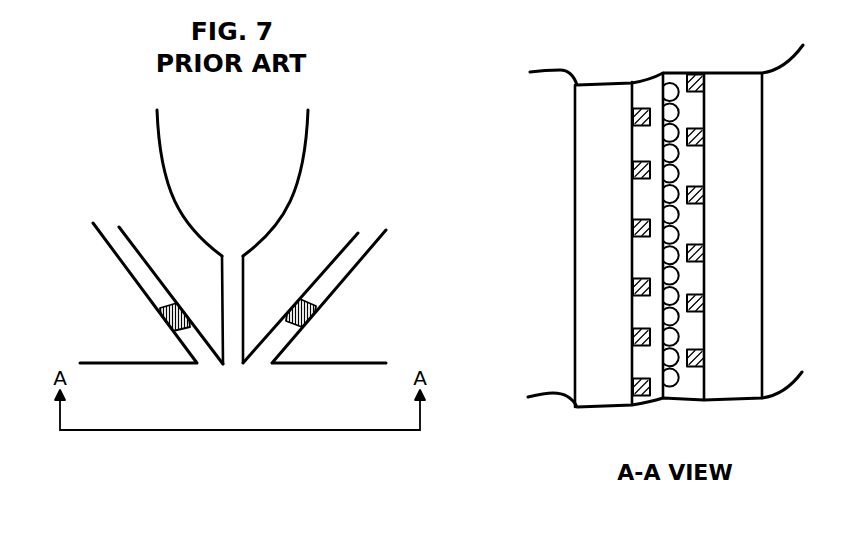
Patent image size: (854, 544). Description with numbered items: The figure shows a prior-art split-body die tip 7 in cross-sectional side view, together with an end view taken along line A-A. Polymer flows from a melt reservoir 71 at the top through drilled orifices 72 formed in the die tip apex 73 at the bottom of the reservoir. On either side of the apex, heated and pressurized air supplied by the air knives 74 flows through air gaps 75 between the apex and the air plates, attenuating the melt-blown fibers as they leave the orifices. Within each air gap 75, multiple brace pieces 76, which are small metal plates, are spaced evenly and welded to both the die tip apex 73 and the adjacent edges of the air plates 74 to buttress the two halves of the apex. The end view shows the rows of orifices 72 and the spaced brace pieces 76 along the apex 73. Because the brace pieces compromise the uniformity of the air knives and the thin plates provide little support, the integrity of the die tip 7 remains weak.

The split-body die tip 7 is at (92, 118).
The melt reservoir 71 is at (217, 191).
The drilled orifices 72 is at (235, 352).
The die tip apex 73 is at (175, 285).
The air knives 74 is at (97, 326).
The air gaps 75 is at (270, 347).
The brace pieces 76 is at (303, 325).